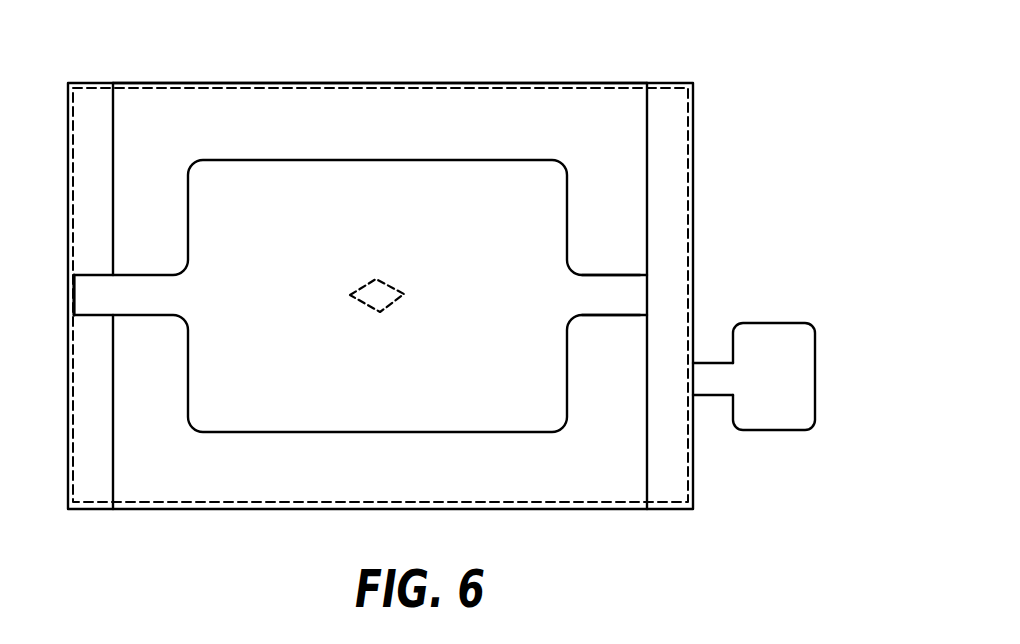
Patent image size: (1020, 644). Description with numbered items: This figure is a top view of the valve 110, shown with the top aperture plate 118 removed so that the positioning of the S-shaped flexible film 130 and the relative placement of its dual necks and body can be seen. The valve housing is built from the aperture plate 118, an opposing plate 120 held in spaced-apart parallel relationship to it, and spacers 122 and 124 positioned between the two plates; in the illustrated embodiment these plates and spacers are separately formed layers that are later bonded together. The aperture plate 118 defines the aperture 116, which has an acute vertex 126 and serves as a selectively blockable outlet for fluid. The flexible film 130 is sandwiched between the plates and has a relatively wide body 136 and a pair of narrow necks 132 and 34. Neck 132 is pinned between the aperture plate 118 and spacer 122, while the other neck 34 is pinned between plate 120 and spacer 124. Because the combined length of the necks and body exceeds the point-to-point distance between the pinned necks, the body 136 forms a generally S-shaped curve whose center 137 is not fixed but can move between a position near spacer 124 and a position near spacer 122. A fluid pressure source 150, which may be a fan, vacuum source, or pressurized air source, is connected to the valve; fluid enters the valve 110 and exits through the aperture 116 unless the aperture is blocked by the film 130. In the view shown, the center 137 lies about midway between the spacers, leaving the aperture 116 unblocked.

The valve 110 is at (158, 75).
The aperture plate 118 is at (690, 163).
The opposing plate 120 is at (585, 117).
The spacer 122 is at (94, 468).
The spacer 124 is at (667, 456).
The flexible film 130 is at (287, 160).
The neck 132 is at (150, 303).
The neck 34 is at (607, 311).
The body 136 is at (355, 404).
The center 137 is at (468, 293).
The aperture 116 is at (367, 285).
The acute vertex 126 is at (403, 295).
The fluid pressure source 150 is at (798, 392).